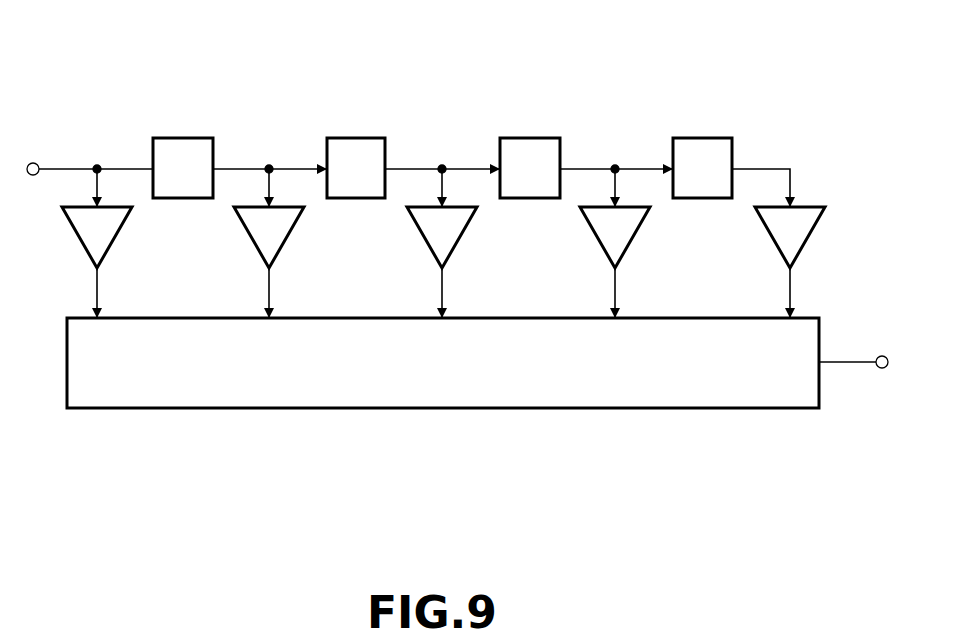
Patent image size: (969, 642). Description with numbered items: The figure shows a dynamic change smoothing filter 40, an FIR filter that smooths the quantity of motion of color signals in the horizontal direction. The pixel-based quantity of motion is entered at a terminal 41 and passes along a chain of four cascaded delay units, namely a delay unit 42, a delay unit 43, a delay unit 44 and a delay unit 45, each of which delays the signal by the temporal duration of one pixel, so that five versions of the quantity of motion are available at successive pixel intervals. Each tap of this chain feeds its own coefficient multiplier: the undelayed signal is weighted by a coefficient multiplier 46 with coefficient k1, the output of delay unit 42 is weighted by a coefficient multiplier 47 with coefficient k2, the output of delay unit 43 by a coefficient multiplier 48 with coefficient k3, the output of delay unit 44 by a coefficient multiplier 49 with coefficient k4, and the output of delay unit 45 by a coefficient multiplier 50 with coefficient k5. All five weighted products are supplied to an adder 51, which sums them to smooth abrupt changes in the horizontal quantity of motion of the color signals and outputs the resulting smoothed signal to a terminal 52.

The dynamic change smoothing filter 40 is at (604, 118).
The terminal 41 is at (33, 162).
The delay unit 42 is at (178, 138).
The delay unit 43 is at (352, 138).
The delay unit 44 is at (523, 139).
The delay unit 45 is at (702, 139).
The coefficient multiplier 46 is at (107, 238).
The coefficient multiplier 47 is at (279, 238).
The coefficient multiplier 48 is at (452, 238).
The coefficient multiplier 49 is at (625, 238).
The coefficient multiplier 50 is at (800, 238).
The adder 51 is at (434, 410).
The terminal 52 is at (880, 355).